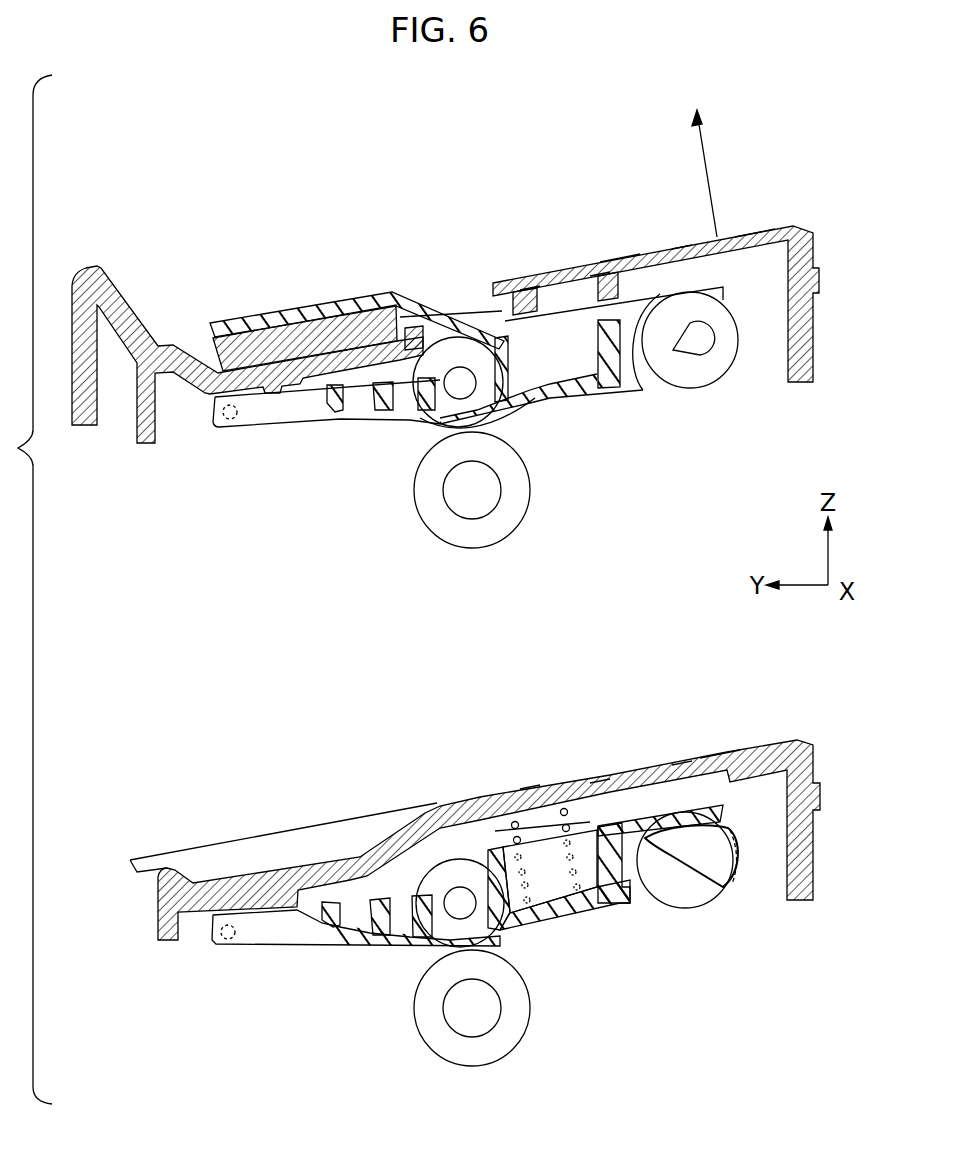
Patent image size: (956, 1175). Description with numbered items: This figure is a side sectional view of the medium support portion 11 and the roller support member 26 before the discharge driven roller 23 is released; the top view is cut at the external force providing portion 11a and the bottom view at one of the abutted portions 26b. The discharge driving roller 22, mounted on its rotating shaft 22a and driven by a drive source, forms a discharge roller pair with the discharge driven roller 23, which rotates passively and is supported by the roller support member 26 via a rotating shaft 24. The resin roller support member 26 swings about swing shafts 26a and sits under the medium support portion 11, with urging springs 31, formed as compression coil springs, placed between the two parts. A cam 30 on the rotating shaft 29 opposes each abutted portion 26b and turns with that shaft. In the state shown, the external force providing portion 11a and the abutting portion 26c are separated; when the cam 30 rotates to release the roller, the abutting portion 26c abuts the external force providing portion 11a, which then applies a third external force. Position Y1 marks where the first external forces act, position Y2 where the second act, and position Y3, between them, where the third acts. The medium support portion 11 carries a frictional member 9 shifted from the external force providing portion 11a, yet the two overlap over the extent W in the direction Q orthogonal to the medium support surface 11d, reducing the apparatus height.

The frictional member 9 is at (375, 294).
The extent W is at (513, 352).
The medium support portion 11 is at (800, 228).
The external force providing portion 11a is at (623, 262).
The medium support surface 11d is at (753, 235).
The position Y1 is at (681, 247).
The position Y2 is at (530, 300).
The position Y3 is at (600, 280).
The direction Q is at (702, 160).
The discharge driving roller 22 is at (523, 508).
The rotating shaft 22a is at (462, 498).
The discharge driven roller 23 is at (480, 428).
The rotating shaft 24 is at (453, 385).
The roller support member 26 is at (592, 398).
The swing shaft 26a is at (249, 428).
The abutted portion 26b is at (647, 822).
The abutting portion 26c is at (604, 320).
The rotating shaft 29 is at (690, 352).
The cam 30 is at (707, 868).
The urging spring 31 is at (483, 815).